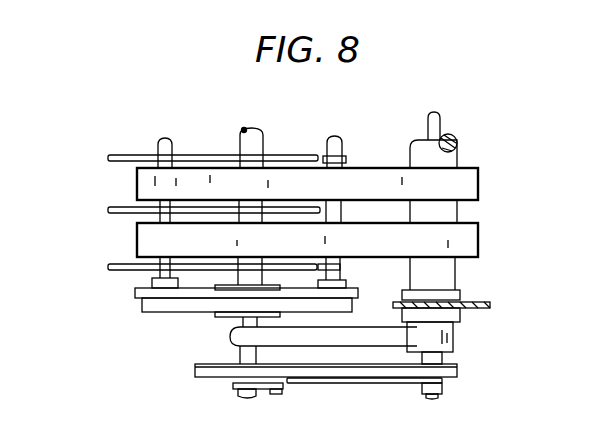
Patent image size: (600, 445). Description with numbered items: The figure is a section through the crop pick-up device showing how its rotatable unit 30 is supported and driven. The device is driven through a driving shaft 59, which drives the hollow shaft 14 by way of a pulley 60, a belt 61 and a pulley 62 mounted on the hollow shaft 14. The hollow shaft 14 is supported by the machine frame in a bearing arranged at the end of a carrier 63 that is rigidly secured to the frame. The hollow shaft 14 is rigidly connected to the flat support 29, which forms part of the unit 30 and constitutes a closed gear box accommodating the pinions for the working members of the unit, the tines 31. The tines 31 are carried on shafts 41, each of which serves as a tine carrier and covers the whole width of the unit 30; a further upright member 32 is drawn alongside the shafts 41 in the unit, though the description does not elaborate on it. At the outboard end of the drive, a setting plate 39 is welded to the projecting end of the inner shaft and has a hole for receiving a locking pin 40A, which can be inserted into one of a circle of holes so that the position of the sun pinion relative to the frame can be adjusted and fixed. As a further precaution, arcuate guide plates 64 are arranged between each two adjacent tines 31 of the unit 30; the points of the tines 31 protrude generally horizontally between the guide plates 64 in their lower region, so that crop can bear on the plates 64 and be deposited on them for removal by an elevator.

The rotatable unit 30 is at (107, 150).
The shaft 41 is at (165, 137).
The center post 32 is at (243, 128).
The driving shaft 59 is at (430, 122).
The arcuate guide plates 64 is at (143, 178).
The tines 31 is at (293, 157).
The flat support 29 is at (166, 298).
The hollow shaft 14 is at (240, 322).
The carrier 63 is at (384, 325).
The pulley 62 is at (195, 365).
The pulley 60 is at (455, 368).
The setting plate 39 is at (262, 393).
The locking pin 40A is at (268, 392).
The belt 61 is at (378, 388).